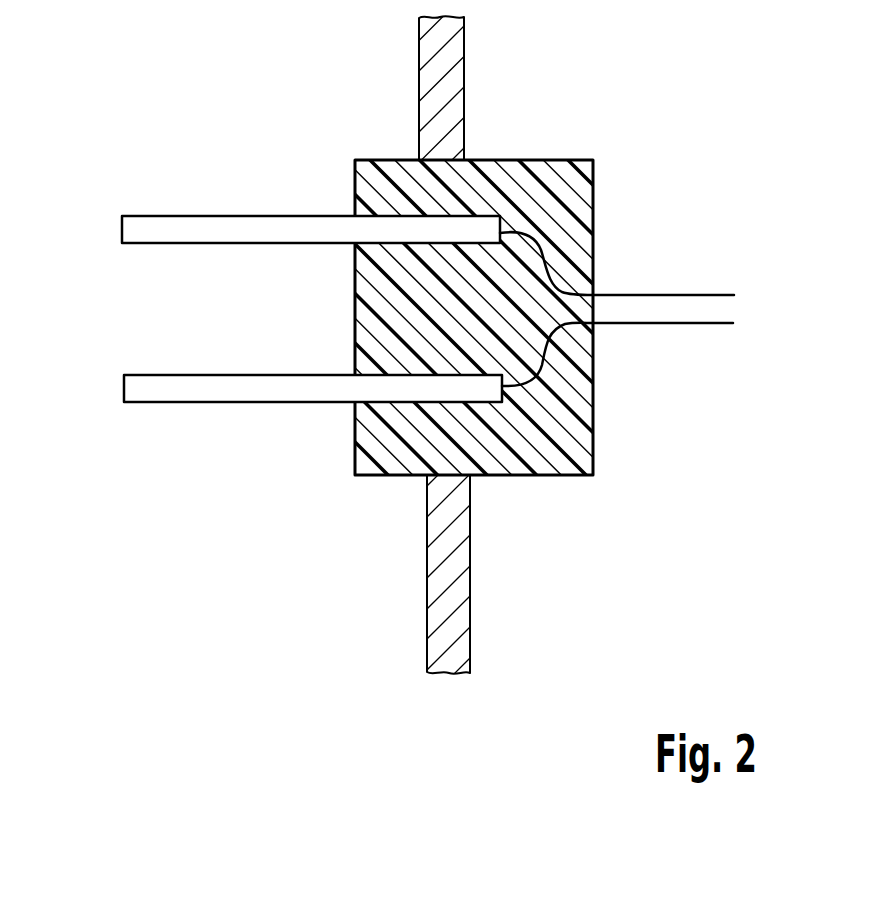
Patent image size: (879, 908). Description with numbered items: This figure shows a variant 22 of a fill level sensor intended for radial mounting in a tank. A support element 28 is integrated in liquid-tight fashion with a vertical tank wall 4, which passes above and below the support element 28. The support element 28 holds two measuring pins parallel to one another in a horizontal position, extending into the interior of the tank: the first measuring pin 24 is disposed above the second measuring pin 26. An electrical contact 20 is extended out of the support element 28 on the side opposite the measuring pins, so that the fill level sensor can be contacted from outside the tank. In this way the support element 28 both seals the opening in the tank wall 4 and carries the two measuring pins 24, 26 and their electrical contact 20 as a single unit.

The vertical tank wall 4 is at (440, 70).
The electrical contact 20 is at (673, 276).
The variant of a fill level sensor 22 is at (277, 603).
The first measuring pin 24 is at (143, 230).
The second measuring pin 26 is at (150, 390).
The support element 28 is at (572, 448).